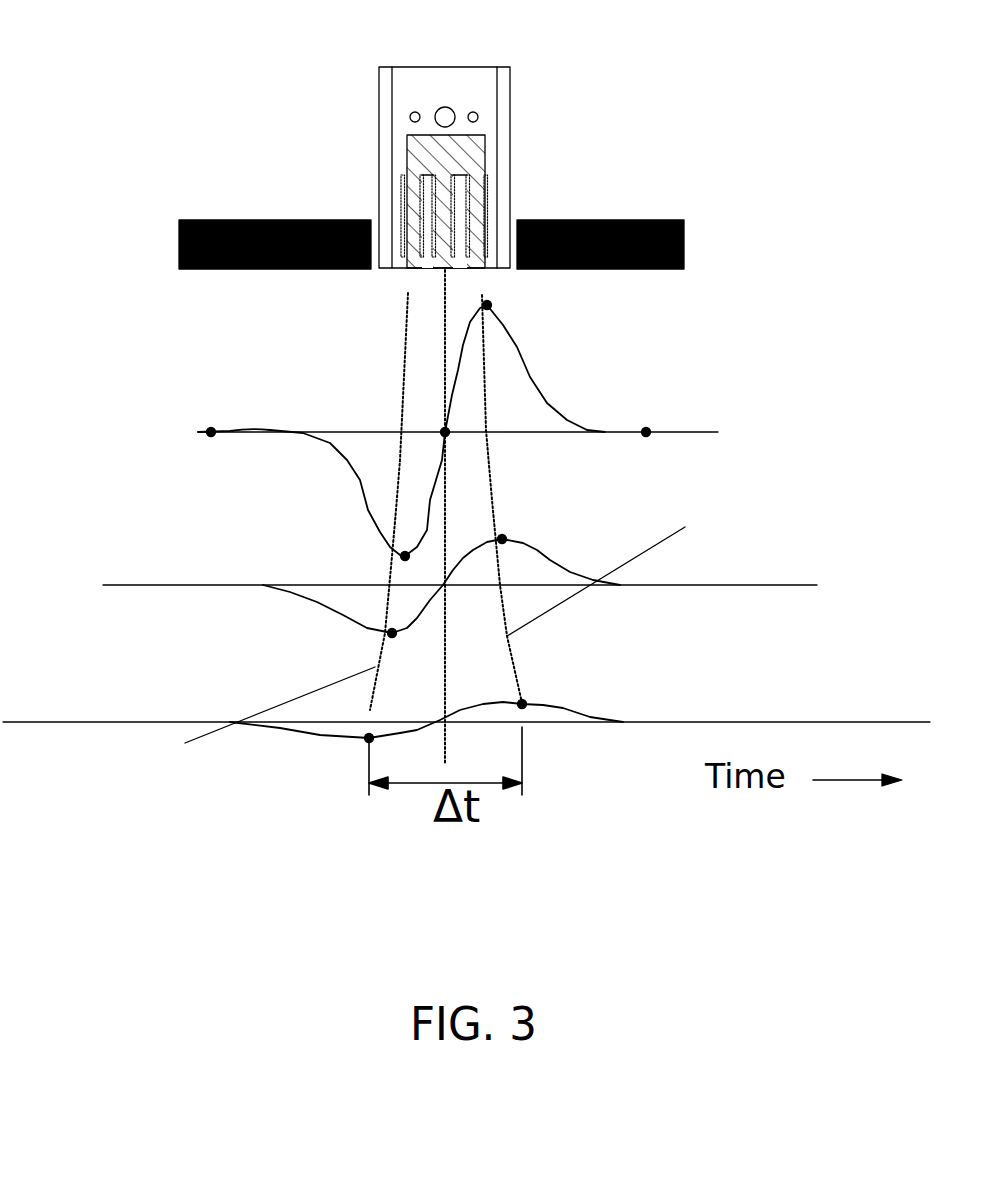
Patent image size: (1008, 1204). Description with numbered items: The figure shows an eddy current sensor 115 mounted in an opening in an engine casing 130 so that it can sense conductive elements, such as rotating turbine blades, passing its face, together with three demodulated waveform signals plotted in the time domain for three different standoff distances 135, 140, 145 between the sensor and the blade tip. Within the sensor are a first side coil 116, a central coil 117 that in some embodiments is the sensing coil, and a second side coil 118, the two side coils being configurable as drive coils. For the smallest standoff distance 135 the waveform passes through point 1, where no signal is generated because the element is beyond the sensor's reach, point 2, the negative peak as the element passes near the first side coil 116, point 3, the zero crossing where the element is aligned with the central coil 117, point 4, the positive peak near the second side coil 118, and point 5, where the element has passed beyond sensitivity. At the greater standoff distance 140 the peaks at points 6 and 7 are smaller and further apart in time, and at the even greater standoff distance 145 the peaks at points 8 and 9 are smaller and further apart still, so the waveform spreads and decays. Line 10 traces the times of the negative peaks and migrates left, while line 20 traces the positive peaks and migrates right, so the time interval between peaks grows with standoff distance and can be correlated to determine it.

The eddy current sensor 115 is at (467, 70).
The first side coil 116 is at (408, 223).
The central coil 117 is at (423, 180).
The second side coil 118 is at (473, 213).
The engine casing 130 is at (644, 220).
The standoff distance 135 is at (713, 426).
The standoff distance 140 is at (780, 582).
The standoff distance 145 is at (795, 720).
The point 1 is at (209, 434).
The point 2 is at (402, 558).
The point 3 is at (443, 431).
The point 4 is at (495, 302).
The point 5 is at (652, 428).
The point 6 is at (388, 635).
The point 7 is at (507, 535).
The point 8 is at (366, 740).
The point 9 is at (525, 700).
The line 10 is at (261, 712).
The line 20 is at (614, 576).